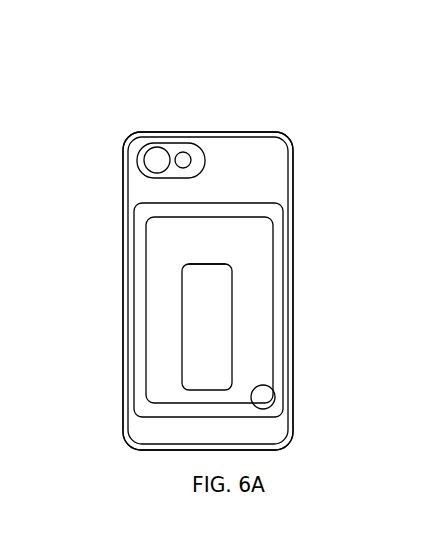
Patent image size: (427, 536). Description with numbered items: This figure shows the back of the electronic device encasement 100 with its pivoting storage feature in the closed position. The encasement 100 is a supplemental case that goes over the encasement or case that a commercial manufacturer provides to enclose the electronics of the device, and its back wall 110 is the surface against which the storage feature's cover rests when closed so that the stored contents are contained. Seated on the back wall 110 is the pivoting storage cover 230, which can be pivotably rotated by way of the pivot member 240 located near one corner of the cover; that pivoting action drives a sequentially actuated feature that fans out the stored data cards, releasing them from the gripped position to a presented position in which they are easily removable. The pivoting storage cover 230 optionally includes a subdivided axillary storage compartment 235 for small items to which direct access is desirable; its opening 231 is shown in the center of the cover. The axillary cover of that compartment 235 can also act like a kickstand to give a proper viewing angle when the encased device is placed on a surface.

The electronic device encasement 100 is at (141, 24).
The back wall 110 is at (262, 157).
The pivoting storage cover 230 is at (260, 245).
The slot opening 231 is at (200, 264).
The axillary storage compartment 235 is at (213, 321).
The pivot member 240 is at (263, 397).